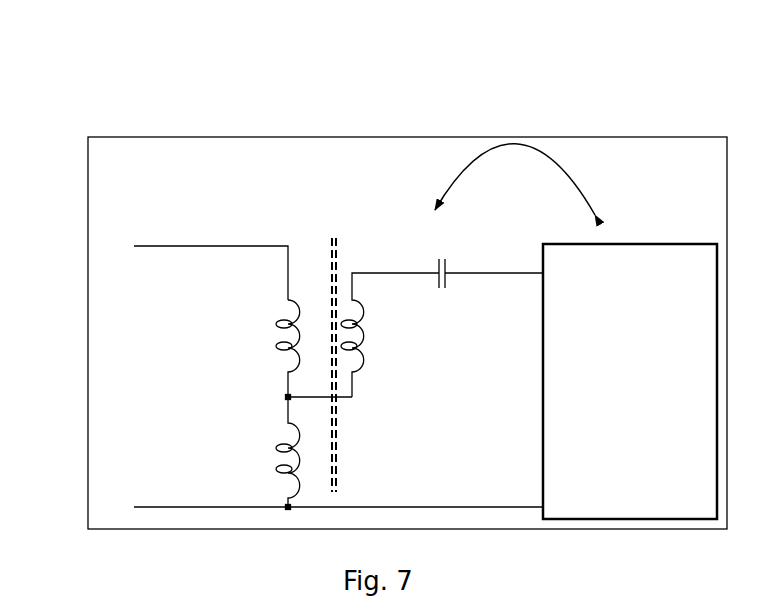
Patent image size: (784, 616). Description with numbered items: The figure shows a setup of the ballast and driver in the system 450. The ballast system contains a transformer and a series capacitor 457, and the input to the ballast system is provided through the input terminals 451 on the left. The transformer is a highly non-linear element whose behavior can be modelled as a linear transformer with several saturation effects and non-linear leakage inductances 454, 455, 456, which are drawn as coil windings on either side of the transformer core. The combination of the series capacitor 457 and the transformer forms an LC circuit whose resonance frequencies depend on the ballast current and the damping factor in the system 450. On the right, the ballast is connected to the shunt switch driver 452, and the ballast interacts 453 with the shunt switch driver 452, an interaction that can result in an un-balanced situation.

The system 450 is at (668, 70).
The input terminals 451 is at (138, 253).
The shunt switch driver 452 is at (703, 237).
The interaction 453 is at (490, 148).
The non-linear leakage inductance 454 is at (273, 320).
The non-linear leakage inductance 455 is at (273, 447).
The non-linear leakage inductance 456 is at (373, 357).
The series capacitor 457 is at (448, 296).